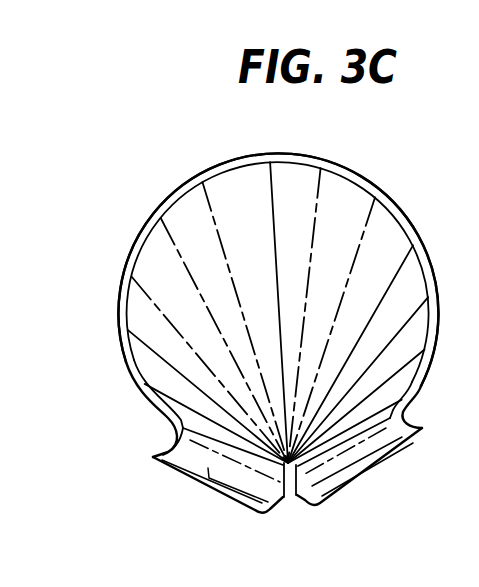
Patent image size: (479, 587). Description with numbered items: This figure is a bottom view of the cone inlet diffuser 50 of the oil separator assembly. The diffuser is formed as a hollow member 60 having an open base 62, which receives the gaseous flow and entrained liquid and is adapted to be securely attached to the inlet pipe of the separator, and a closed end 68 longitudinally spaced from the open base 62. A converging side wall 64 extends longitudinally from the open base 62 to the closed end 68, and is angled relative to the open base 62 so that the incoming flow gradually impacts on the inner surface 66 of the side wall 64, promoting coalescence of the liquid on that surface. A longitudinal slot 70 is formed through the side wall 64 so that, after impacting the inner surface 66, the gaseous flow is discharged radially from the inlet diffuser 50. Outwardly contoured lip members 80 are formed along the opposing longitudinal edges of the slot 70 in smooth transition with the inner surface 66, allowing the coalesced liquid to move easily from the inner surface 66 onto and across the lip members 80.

The inlet diffuser 50 is at (195, 138).
The hollow member 60 is at (133, 379).
The open base 62 is at (153, 212).
The converging side wall 64 is at (120, 323).
The inner surface 66 is at (300, 217).
The closed end 68 is at (290, 497).
The longitudinal slot 70 is at (236, 515).
The outwardly contoured lip members 80 is at (200, 477).